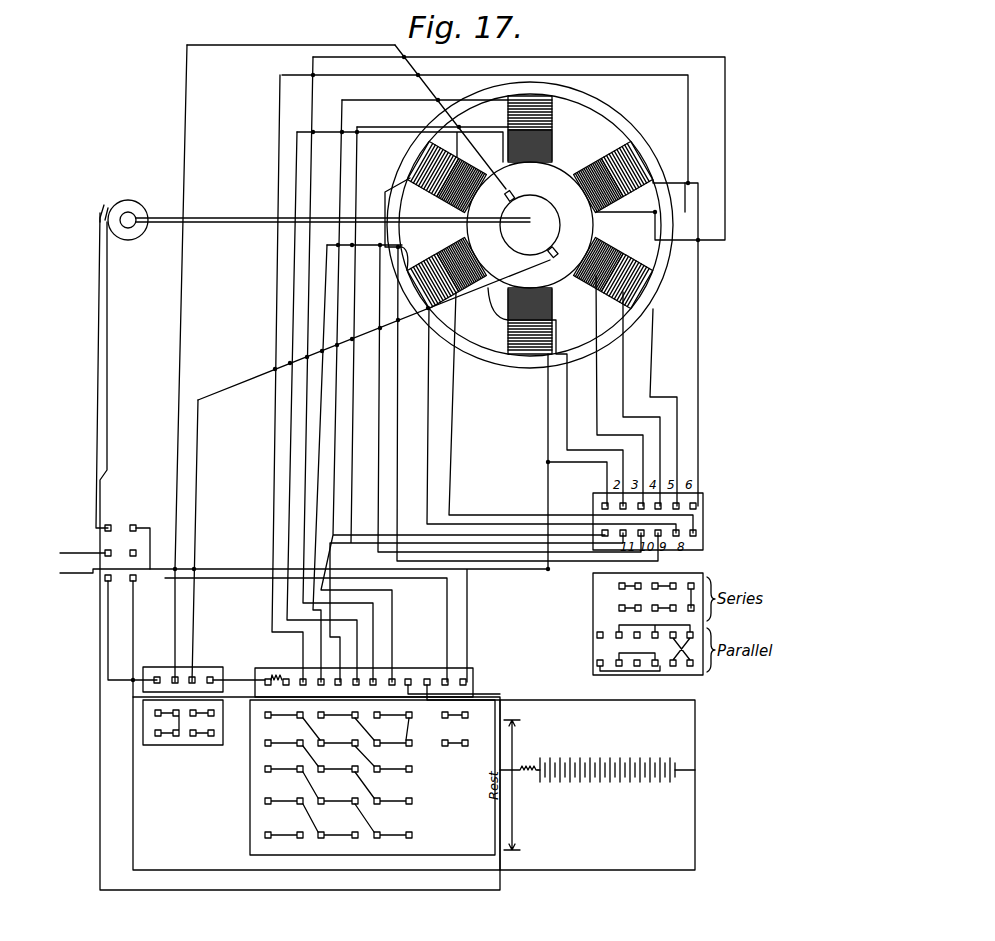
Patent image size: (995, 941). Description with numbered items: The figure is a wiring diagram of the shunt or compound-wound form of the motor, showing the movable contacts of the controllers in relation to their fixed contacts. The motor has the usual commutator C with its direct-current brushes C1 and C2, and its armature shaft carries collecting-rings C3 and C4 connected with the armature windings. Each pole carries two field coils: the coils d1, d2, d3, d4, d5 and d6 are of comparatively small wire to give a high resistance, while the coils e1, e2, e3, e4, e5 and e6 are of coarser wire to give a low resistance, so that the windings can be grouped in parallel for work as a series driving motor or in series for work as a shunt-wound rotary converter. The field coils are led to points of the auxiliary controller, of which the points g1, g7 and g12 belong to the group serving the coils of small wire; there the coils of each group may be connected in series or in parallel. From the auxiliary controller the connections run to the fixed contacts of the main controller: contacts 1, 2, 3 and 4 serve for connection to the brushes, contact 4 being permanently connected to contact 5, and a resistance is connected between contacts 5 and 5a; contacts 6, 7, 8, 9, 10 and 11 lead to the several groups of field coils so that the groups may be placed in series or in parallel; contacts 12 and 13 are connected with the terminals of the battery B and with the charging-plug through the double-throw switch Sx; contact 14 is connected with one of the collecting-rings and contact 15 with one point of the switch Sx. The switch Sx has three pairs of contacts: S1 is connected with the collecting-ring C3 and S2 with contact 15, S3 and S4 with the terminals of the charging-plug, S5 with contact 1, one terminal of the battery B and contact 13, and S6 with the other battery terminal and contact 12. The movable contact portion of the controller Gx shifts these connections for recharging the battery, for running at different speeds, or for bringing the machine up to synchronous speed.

The commutator C is at (543, 212).
The direct-current brush C1 is at (512, 190).
The direct-current brush C2 is at (554, 249).
The collecting-ring C3 is at (106, 206).
The collecting-ring C4 is at (136, 210).
The field coil d1 is at (507, 328).
The field coil d2 is at (638, 279).
The field coil d3 is at (616, 156).
The field coil d4 is at (552, 122).
The field coil d5 is at (438, 193).
The field coil d6 is at (429, 268).
The field coil e1 is at (546, 313).
The field coil e2 is at (588, 281).
The field coil e3 is at (599, 196).
The field coil e4 is at (551, 152).
The field coil e5 is at (462, 189).
The field coil e6 is at (462, 263).
The switch contact S1 is at (108, 525).
The switch contact S2 is at (133, 525).
The switch contact S3 is at (105, 553).
The switch contact S4 is at (133, 556).
The switch contact S5 is at (105, 581).
The switch contact S6 is at (135, 581).
The double-throw switch Sx is at (124, 545).
The controller contact 1 is at (155, 677).
The controller contact 2 is at (173, 677).
The controller contact 3 is at (190, 677).
The controller contact 4 is at (210, 677).
The controller contact 5 is at (266, 679).
The controller contact 5a is at (285, 679).
The controller contact 6 is at (303, 679).
The controller contact 7 is at (321, 679).
The controller contact 8 is at (338, 679).
The controller contact 9 is at (356, 679).
The controller contact 10 is at (373, 679).
The controller contact 11 is at (392, 679).
The controller contact 12 is at (408, 679).
The controller contact 13 is at (427, 679).
The controller contact 14 is at (445, 679).
The controller contact 15 is at (463, 679).
The auxiliary-controller point g1 is at (602, 504).
The auxiliary-controller point g7 is at (696, 533).
The auxiliary-controller point g12 is at (602, 533).
The controller Gx is at (250, 798).
The battery B is at (595, 776).